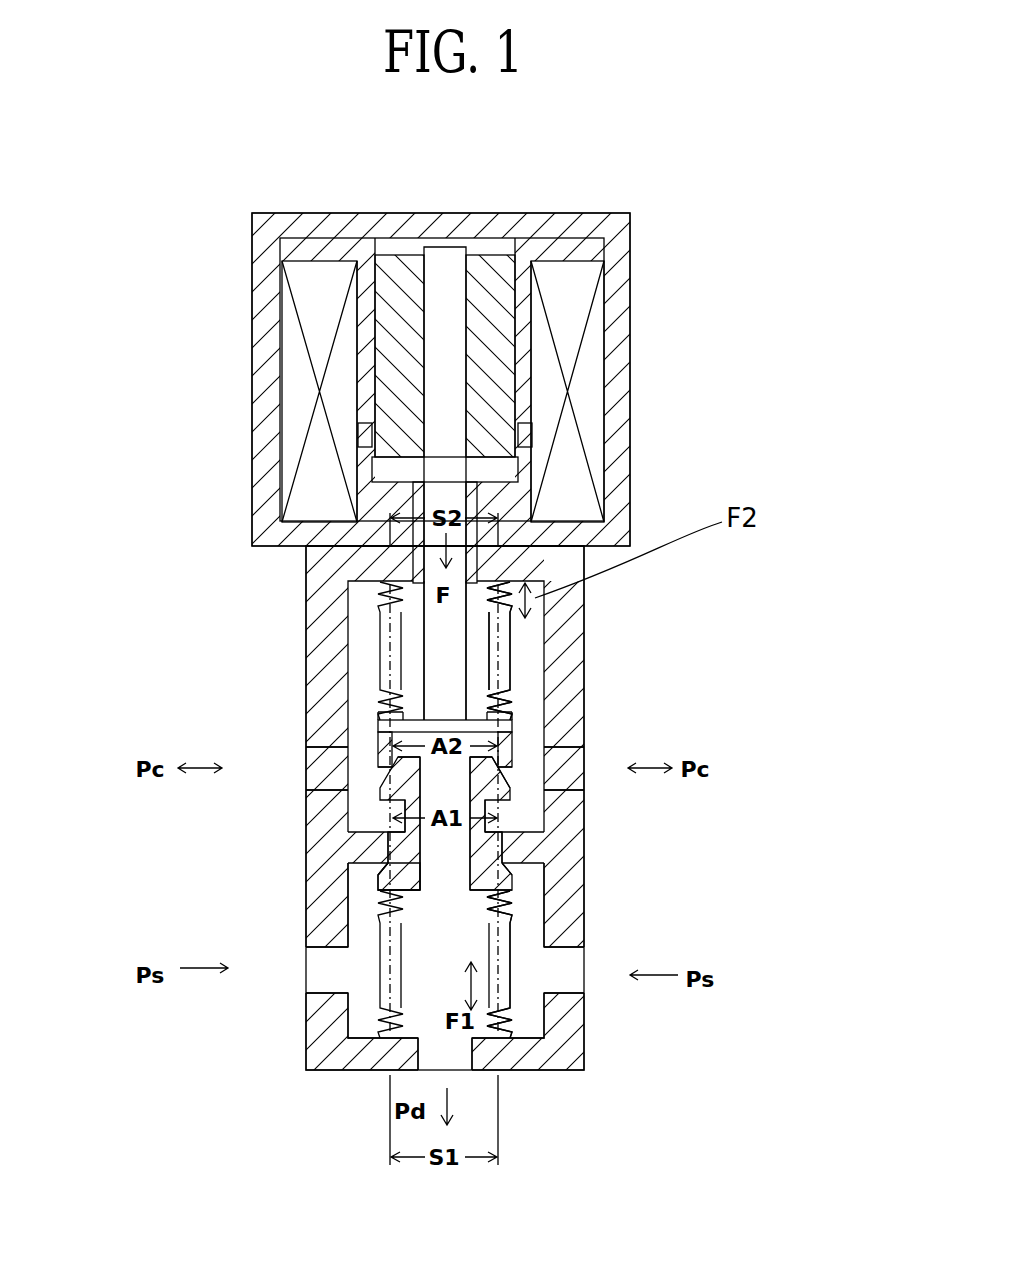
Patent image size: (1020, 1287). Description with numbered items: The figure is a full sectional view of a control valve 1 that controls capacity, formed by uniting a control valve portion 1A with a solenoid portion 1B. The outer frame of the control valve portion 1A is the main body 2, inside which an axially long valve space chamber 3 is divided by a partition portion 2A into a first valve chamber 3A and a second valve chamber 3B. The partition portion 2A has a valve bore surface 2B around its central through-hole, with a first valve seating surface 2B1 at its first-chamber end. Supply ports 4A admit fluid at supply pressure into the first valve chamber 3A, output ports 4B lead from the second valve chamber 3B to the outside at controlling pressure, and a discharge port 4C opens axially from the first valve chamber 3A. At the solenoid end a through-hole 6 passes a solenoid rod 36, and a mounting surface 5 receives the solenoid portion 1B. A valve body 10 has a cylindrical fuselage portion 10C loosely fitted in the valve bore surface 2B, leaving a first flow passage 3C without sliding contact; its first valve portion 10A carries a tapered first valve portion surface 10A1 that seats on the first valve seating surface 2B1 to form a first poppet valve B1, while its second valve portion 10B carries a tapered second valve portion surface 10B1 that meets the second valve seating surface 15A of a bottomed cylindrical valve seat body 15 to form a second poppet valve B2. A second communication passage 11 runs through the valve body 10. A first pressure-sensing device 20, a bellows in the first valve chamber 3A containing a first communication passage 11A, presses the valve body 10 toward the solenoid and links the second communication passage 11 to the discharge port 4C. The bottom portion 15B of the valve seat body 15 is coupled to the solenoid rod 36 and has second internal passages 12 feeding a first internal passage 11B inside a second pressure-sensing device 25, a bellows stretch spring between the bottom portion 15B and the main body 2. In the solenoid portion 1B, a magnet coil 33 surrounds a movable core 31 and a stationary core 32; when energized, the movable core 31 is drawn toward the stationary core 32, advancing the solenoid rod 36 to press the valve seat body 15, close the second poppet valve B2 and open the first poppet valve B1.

The control valve 1 is at (650, 210).
The control valve portion 1A is at (585, 618).
The solenoid portion 1B is at (633, 413).
The main body 2 is at (303, 600).
The partition portion 2A is at (510, 880).
The valve bore surface 2B is at (520, 855).
The first valve seating surface 2B1 is at (500, 900).
The valve space chamber 3 is at (516, 812).
The first valve chamber 3A is at (522, 1042).
The second valve chamber 3B is at (540, 752).
The first flow passage 3C is at (405, 833).
The supply port 4A is at (322, 968).
The output port 4B is at (322, 790).
The discharge port 4C is at (440, 1073).
The mounting surface 5 is at (500, 523).
The through-hole 6 is at (392, 580).
The valve body 10 is at (378, 905).
The first valve portion 10A is at (395, 890).
The first valve portion surface 10A1 is at (392, 868).
The second valve portion 10B is at (492, 792).
The second valve portion surface 10B1 is at (385, 762).
The fuselage portion 10C is at (382, 938).
The second communication passage 11 is at (426, 981).
The first communication passage 11A is at (380, 1012).
The first internal passage 11B is at (480, 636).
The second internal passage 12 is at (463, 708).
The valve seat body 15 is at (385, 728).
The second valve seating surface 15A is at (385, 748).
The bottom portion 15B is at (392, 672).
The first pressure-sensing device 20 is at (590, 1042).
The second pressure-sensing device 25 is at (500, 662).
The movable core 31 is at (490, 280).
The stationary core 32 is at (385, 500).
The magnet coil 33 is at (320, 312).
The solenoid rod 36 is at (445, 283).
The first poppet valve B1 is at (540, 922).
The second poppet valve B2 is at (520, 702).